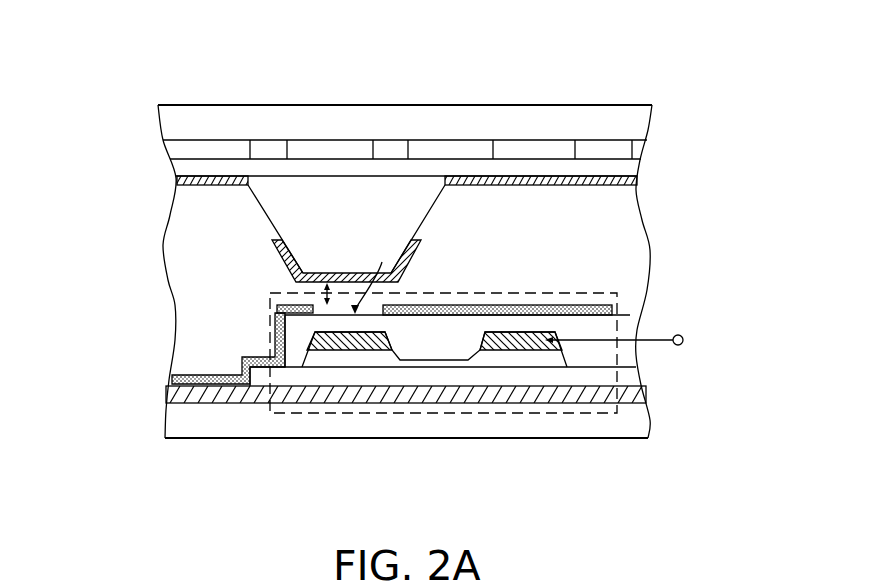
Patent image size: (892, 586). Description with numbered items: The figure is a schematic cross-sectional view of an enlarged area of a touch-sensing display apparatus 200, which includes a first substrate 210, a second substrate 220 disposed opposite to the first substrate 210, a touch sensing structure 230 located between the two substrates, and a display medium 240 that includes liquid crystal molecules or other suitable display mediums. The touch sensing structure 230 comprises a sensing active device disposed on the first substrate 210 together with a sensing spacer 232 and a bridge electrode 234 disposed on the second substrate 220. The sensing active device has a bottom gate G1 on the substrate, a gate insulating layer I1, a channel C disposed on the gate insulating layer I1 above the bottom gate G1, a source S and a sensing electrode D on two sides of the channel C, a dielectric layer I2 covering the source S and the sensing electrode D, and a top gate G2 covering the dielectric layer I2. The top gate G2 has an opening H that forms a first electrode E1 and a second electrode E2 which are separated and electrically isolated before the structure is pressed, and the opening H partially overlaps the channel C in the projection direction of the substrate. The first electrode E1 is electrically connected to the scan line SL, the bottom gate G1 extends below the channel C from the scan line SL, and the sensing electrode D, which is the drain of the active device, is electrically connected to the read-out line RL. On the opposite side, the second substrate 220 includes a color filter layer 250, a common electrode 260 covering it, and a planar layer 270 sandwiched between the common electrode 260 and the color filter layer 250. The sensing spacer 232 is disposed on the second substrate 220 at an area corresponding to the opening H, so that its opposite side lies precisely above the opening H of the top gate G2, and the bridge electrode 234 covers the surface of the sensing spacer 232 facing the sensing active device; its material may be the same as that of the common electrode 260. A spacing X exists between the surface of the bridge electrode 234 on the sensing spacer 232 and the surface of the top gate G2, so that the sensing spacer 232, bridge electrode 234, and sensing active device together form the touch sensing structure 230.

The touch-sensing display apparatus 200 is at (413, 254).
The first substrate 210 is at (443, 247).
The second substrate 220 is at (443, 162).
The touch sensing structure 230 is at (233, 261).
The sensing spacer 232 is at (303, 221).
The bridge electrode 234 is at (277, 258).
The display medium 240 is at (620, 278).
The color filter layer 250 is at (640, 150).
The common electrode 260 is at (630, 186).
The planar layer 270 is at (628, 167).
The scan line SL is at (205, 385).
The source S is at (341, 350).
The channel C is at (432, 361).
The bottom gate G1 is at (452, 404).
The sensing electrode D is at (516, 350).
The gate insulating layer I1 is at (623, 377).
The dielectric layer I2 is at (625, 325).
The read-out line RL is at (630, 343).
The top gate G2 is at (444, 157).
The first electrode E1 is at (292, 305).
The second electrode E2 is at (412, 305).
The spacing X is at (330, 293).
The opening H is at (369, 274).